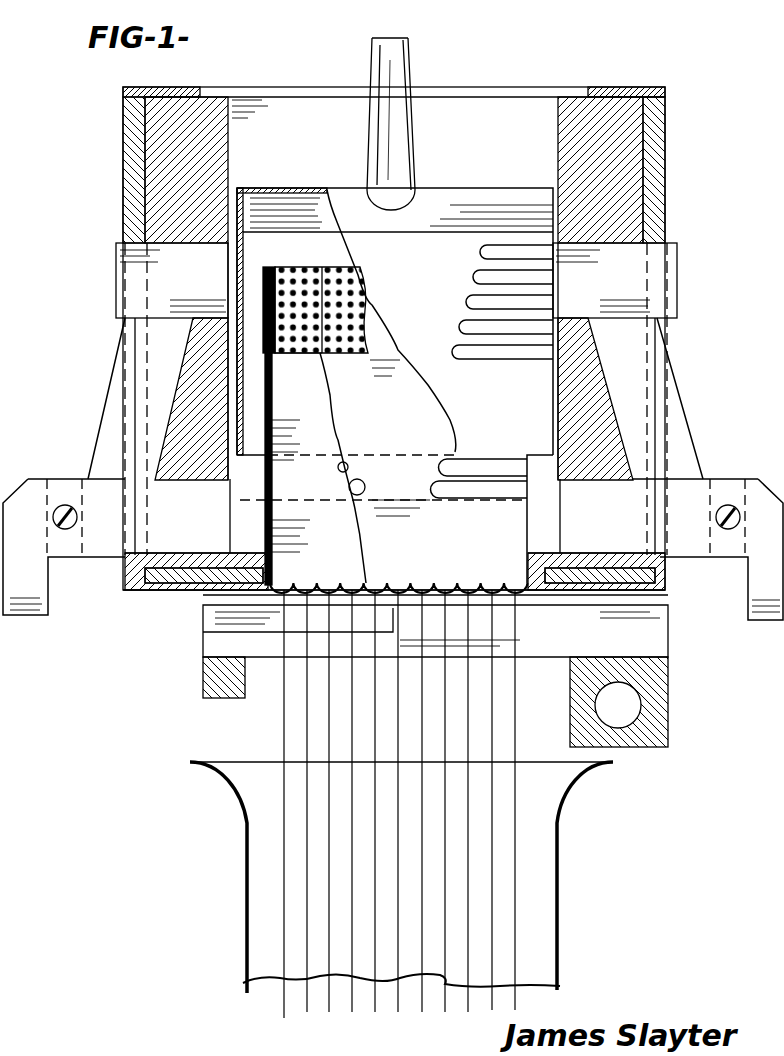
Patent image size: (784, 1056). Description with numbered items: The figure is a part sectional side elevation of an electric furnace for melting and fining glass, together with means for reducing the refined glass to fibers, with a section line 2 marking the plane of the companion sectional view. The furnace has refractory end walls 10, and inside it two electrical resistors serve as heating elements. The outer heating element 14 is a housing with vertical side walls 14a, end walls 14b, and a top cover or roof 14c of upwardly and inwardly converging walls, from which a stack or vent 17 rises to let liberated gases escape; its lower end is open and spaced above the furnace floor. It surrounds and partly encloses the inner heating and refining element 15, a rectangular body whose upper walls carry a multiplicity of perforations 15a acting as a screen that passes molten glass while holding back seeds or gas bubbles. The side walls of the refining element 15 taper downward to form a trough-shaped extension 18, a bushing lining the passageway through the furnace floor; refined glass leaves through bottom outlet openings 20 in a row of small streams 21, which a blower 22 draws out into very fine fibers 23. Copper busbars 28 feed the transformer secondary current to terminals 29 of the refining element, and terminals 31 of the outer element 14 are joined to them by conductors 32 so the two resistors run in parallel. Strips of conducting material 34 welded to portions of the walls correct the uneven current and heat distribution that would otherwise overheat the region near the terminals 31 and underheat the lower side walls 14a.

The section line 2 is at (393, 18).
The end walls 10 is at (158, 192).
The outer heating element 14 is at (445, 309).
The vertical side walls 14a is at (440, 405).
The end walls 14b is at (268, 386).
The top cover portion or roof 14c is at (440, 192).
The inner heating and refining element 15 is at (292, 468).
The perforations 15a is at (326, 270).
The stack or vent 17 is at (412, 74).
The trough-shaped extension 18 is at (445, 550).
The bottom outlet openings 20 is at (320, 576).
The streams 21 is at (280, 598).
The blower 22 is at (525, 658).
The fibers 23 is at (285, 722).
The copper busbars 28 is at (46, 578).
The terminals 29 is at (165, 585).
The terminals 31 is at (118, 297).
The conductors 32 is at (110, 405).
The conducting material 34 is at (484, 280).